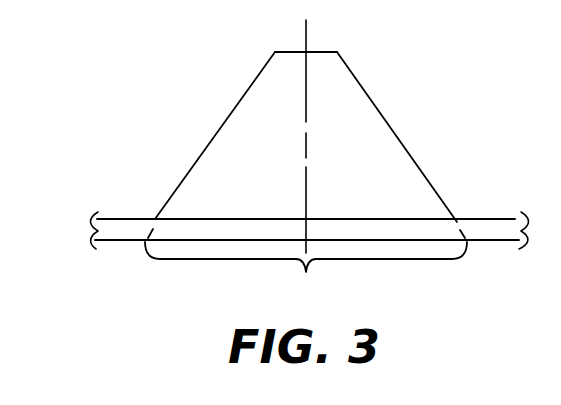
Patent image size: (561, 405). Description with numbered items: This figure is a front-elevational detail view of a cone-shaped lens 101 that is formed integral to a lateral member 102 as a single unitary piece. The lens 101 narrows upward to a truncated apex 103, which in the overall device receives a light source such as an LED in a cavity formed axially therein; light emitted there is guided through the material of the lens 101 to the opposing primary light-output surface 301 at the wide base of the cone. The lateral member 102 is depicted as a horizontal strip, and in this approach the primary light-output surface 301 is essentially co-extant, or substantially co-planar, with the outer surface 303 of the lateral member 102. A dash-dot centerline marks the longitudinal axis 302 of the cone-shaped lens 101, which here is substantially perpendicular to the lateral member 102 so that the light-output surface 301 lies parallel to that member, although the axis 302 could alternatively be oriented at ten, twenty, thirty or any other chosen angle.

The cone-shaped lens 101 is at (383, 115).
The lateral member 102 is at (112, 217).
The truncated apex 103 is at (289, 51).
The primary light-output surface 301 is at (306, 271).
The longitudinal axis 302 is at (305, 98).
The outer surface 303 is at (122, 243).